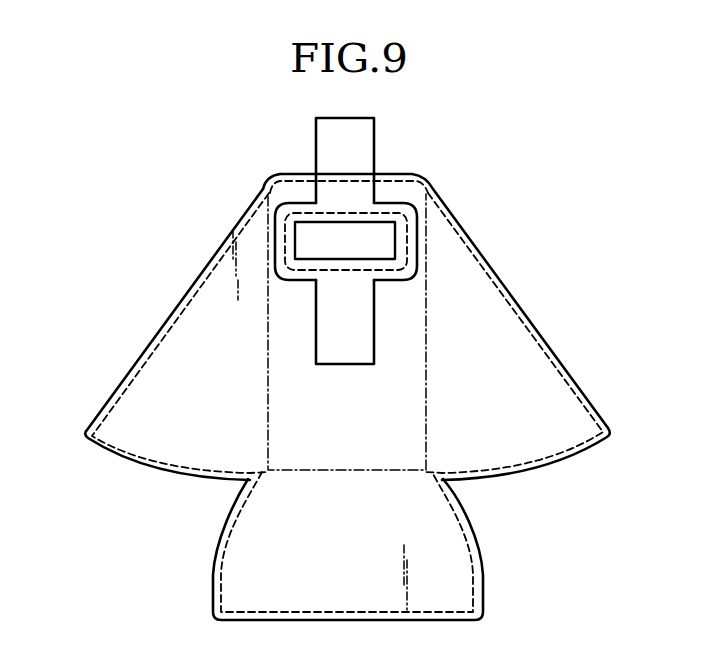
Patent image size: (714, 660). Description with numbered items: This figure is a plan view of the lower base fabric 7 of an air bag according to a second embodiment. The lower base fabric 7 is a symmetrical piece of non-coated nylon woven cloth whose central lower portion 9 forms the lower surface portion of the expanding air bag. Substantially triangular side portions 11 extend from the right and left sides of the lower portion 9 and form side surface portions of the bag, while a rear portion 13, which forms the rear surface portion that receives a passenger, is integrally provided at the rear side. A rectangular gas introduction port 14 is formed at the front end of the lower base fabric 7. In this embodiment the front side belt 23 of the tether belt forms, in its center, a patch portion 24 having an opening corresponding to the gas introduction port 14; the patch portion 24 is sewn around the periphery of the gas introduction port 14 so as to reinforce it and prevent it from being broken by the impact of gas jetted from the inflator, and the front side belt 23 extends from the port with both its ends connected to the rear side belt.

The lower base fabric 7 is at (230, 193).
The lower portion 9 is at (278, 320).
The side portion 11 is at (148, 378).
The rear portion 13 is at (452, 572).
The gas introduction port 14 is at (360, 235).
The front side belt 23 is at (367, 347).
The patch portion 24 is at (418, 240).